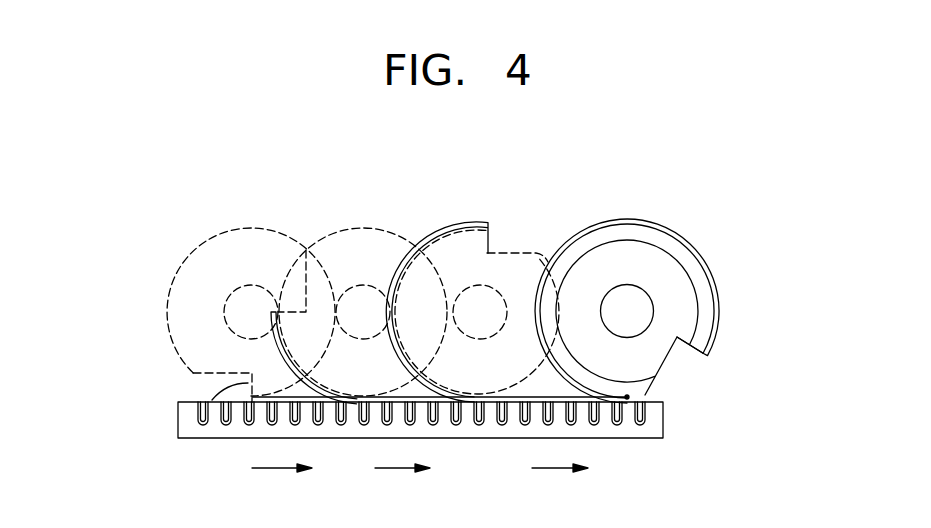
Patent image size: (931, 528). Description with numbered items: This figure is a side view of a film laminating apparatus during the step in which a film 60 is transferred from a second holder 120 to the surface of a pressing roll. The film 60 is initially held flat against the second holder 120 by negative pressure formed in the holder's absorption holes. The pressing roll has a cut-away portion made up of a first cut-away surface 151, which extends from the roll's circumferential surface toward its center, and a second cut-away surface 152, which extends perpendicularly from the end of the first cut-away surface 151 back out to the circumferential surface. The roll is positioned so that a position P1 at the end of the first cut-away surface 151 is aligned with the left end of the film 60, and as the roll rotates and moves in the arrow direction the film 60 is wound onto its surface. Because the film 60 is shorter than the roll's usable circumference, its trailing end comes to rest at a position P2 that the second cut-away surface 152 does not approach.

The film 60 is at (698, 253).
The second holder 120 is at (652, 438).
The first cut-away surface 151 is at (213, 401).
The second cut-away surface 152 is at (217, 372).
The position P1 is at (703, 353).
The position P2 is at (632, 398).